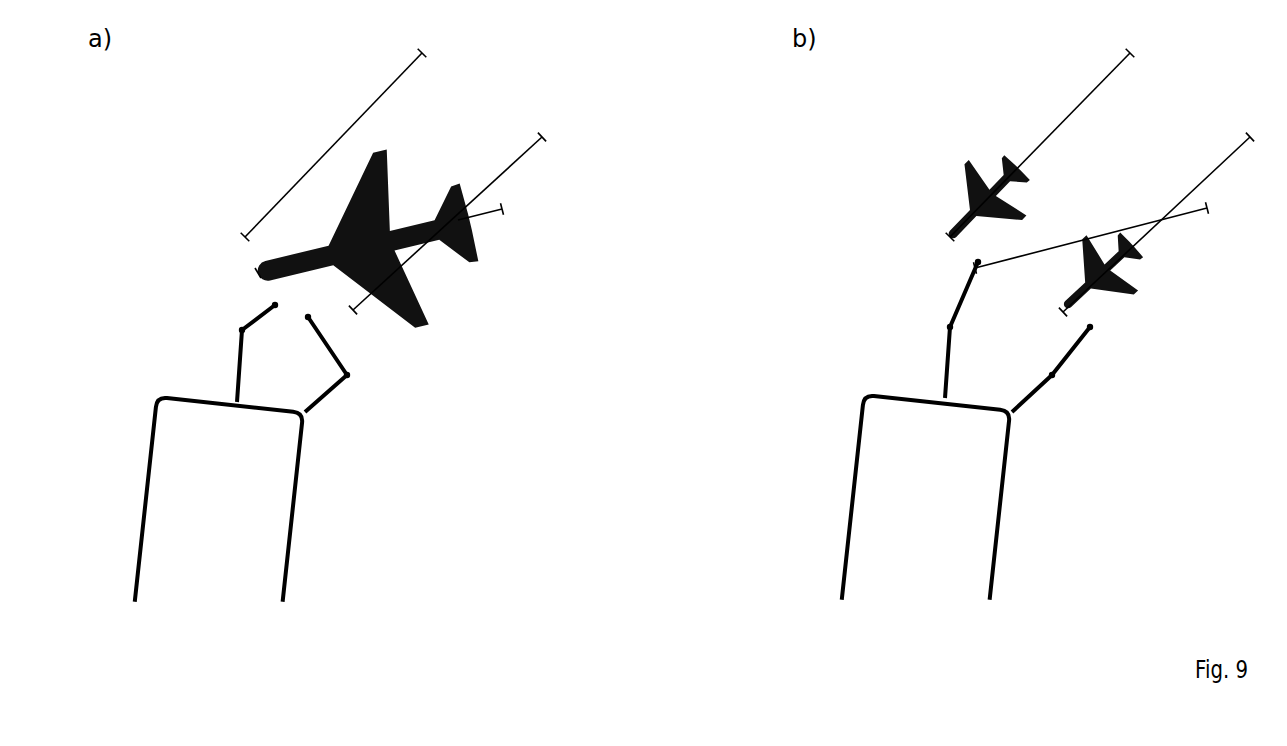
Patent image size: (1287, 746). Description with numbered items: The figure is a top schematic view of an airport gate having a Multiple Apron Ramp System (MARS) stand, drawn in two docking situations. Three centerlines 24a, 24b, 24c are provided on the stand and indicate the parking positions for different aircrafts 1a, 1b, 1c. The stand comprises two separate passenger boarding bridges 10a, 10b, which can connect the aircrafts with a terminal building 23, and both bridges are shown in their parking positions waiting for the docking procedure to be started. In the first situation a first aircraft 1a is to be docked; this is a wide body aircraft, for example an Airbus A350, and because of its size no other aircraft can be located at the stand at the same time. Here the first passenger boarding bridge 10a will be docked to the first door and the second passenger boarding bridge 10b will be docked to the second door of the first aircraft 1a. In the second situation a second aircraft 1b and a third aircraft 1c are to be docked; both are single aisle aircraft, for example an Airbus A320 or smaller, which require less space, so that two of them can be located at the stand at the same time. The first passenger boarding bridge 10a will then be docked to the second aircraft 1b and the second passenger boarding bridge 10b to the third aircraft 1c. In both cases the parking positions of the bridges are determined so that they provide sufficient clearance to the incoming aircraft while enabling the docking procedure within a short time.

In FIG. 9a, the first aircraft 1a is at (315, 250).
In FIG. 9b, the second aircraft 1b is at (960, 217).
In FIG. 9b, the third aircraft 1c is at (1075, 293).
In FIG. 9a, the first passenger boarding bridge 10a is at (237, 369).
In FIG. 9b, the first passenger boarding bridge 10a is at (945, 368).
In FIG. 9a, the second passenger boarding bridge 10b is at (340, 386).
In FIG. 9b, the second passenger boarding bridge 10b is at (1047, 383).
In FIG. 9a, the terminal building 23 is at (242, 504).
In FIG. 9b, the terminal building 23 is at (944, 502).
In FIG. 9a, the first centerline 24a is at (503, 212).
In FIG. 9b, the first centerline 24a is at (1207, 211).
In FIG. 9a, the second centerline 24b is at (536, 139).
In FIG. 9b, the second centerline 24b is at (1243, 139).
In FIG. 9a, the third centerline 24c is at (418, 55).
In FIG. 9b, the third centerline 24c is at (1124, 55).